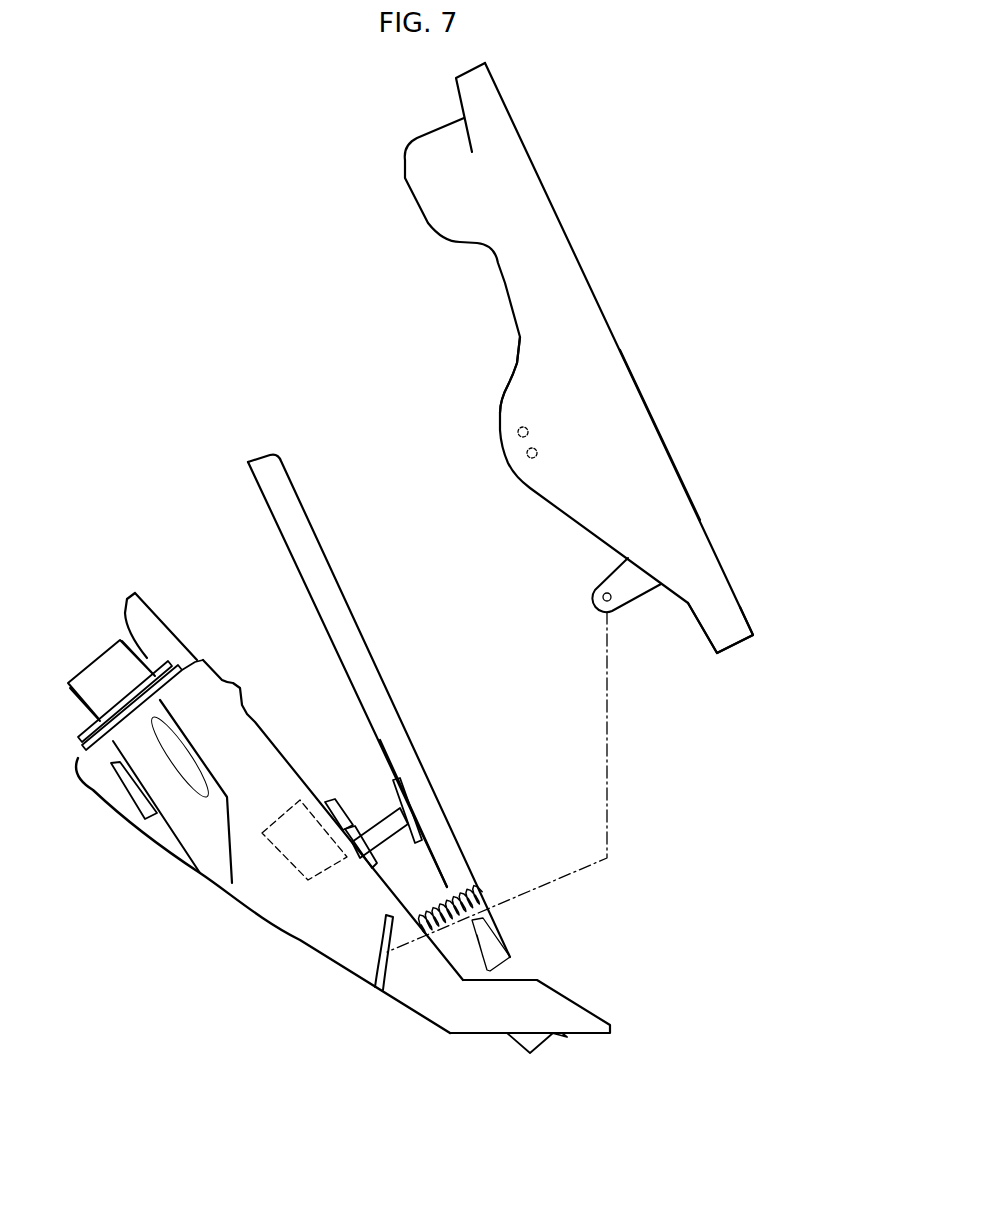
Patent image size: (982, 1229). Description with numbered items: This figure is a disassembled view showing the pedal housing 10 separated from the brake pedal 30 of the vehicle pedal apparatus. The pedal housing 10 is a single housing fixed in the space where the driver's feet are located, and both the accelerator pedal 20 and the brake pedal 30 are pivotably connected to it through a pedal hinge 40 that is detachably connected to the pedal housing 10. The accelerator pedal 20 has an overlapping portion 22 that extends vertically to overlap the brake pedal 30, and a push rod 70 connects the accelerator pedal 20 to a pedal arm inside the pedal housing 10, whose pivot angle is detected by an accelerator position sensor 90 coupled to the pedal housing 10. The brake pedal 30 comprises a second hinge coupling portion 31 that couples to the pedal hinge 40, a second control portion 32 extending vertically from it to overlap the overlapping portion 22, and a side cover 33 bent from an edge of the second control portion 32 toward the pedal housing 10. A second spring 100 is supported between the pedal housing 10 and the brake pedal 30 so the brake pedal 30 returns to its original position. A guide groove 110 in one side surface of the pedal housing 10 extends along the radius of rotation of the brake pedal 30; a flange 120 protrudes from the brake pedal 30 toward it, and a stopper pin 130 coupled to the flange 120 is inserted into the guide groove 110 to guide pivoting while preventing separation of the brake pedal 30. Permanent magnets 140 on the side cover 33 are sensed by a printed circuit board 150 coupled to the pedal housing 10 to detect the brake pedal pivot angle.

The pedal housing 10 is at (265, 897).
The accelerator pedal 20 is at (346, 595).
The overlapping portion 22 is at (393, 728).
The brake pedal 30 is at (566, 218).
The second hinge coupling portion 31 is at (733, 617).
The second control portion 32 is at (615, 335).
The side cover 33 is at (520, 392).
The pedal hinge 40 is at (487, 978).
The push rod 70 is at (380, 823).
The accelerator position sensor 90 is at (90, 677).
The second spring 100 is at (445, 895).
The guide groove 110 is at (378, 968).
The flange 120 is at (642, 583).
The stopper pin 130 is at (602, 597).
The permanent magnets 140 is at (532, 453).
The printed circuit board 150 is at (308, 883).